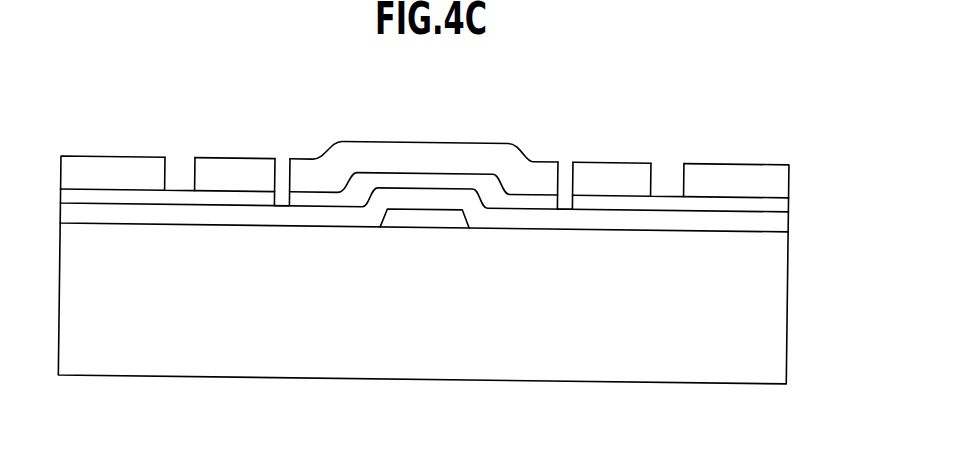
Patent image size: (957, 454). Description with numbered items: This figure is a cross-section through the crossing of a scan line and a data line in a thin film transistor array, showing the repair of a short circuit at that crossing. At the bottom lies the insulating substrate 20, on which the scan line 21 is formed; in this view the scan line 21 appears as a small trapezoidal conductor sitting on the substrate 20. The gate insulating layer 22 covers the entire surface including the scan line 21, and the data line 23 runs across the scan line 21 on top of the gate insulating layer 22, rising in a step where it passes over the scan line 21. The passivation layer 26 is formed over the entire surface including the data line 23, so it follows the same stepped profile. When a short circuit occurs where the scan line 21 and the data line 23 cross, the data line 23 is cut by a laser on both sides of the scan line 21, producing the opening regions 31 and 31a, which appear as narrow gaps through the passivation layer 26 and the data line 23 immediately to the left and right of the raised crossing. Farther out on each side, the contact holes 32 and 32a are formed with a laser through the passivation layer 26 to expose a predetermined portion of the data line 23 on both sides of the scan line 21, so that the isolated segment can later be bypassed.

The insulating substrate 20 is at (780, 310).
The scan line 21 is at (422, 221).
The gate insulating layer 22 is at (783, 225).
The data line 23 is at (783, 200).
The passivation layer 26 is at (783, 182).
The opening region 31 is at (282, 160).
The opening region 31a is at (563, 162).
The contact hole 32 is at (178, 160).
The contact hole 32a is at (667, 163).